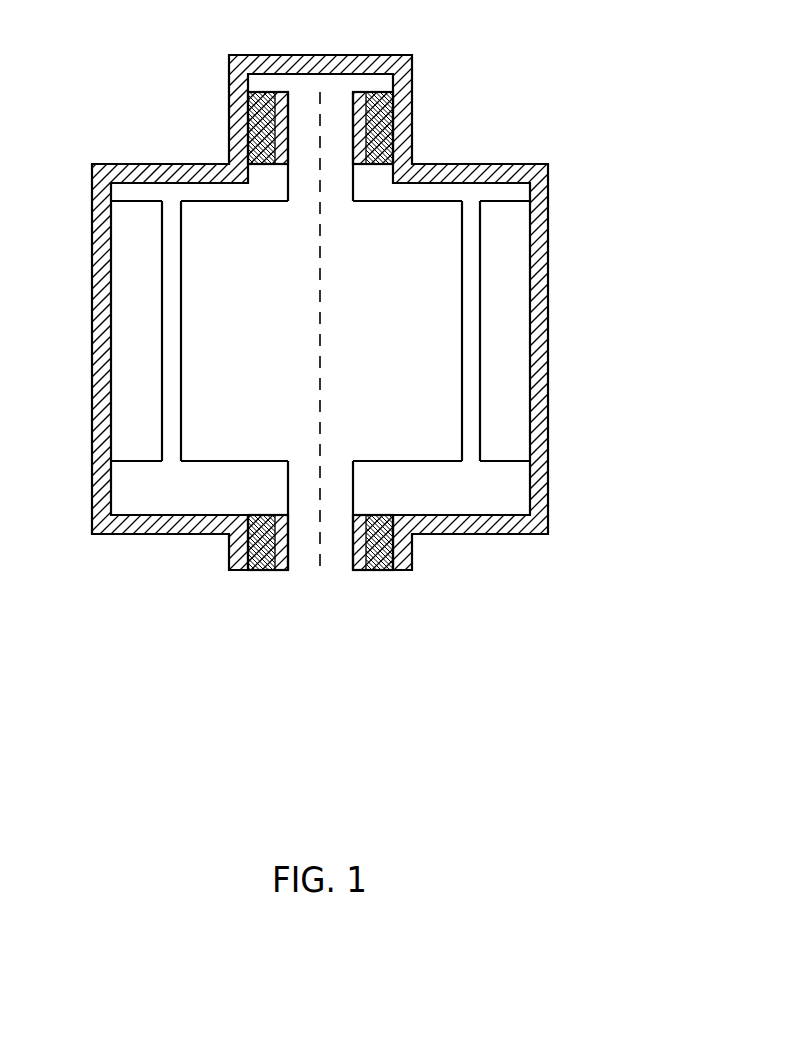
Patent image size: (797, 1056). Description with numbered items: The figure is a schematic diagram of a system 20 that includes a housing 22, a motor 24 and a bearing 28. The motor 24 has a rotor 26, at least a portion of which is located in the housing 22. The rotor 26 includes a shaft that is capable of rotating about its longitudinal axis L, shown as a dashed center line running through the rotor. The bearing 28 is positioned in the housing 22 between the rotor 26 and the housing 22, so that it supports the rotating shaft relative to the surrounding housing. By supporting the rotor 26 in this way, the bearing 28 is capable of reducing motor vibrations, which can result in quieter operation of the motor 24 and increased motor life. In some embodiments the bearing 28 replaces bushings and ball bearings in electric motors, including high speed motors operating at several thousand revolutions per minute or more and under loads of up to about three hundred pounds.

The system 20 is at (622, 188).
The housing 22 is at (495, 525).
The motor 24 is at (163, 469).
The rotor 26 is at (320, 92).
The bearing 28 is at (380, 128).
The longitudinal axis L is at (320, 362).